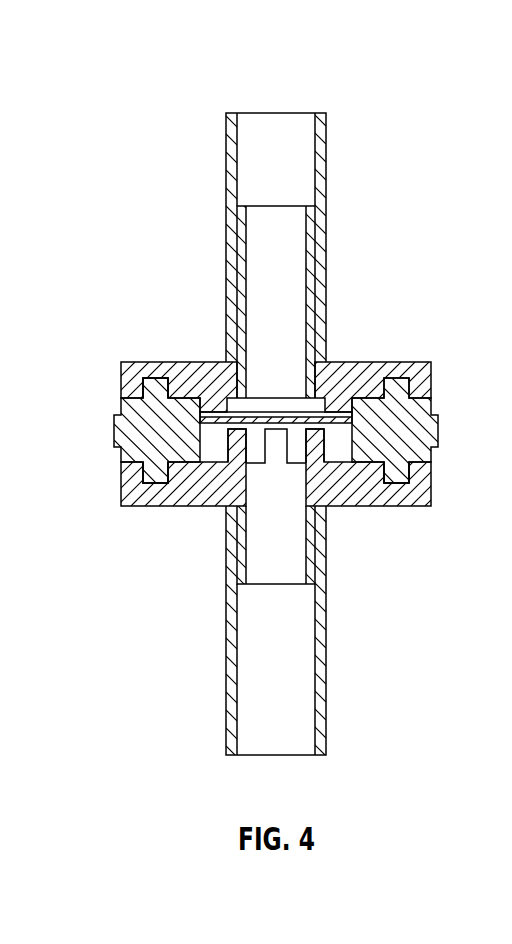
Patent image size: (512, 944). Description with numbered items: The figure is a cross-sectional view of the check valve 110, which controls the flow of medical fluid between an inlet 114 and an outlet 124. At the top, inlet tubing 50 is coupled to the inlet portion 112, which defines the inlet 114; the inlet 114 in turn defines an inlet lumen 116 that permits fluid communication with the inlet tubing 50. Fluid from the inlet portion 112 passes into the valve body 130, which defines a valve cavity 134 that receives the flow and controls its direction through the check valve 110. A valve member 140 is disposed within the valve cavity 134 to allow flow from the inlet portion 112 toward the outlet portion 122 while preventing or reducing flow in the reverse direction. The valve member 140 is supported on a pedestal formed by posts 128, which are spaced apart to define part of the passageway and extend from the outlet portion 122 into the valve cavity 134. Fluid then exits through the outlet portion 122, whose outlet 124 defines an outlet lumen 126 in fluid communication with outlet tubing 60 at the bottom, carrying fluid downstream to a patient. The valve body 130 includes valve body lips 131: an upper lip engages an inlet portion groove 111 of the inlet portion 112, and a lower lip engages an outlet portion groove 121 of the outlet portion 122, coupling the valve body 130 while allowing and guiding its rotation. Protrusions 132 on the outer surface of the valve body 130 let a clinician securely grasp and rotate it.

The check valve 110 is at (416, 78).
The inlet tubing 50 is at (324, 143).
The inlet lumen 116 is at (270, 238).
The inlet 114 is at (242, 272).
The inlet portion 112 is at (153, 362).
The inlet portion groove 111 is at (153, 378).
The posts 128 is at (226, 447).
The protrusions 132 is at (117, 433).
The outlet portion groove 121 is at (152, 503).
The outlet portion 122 is at (208, 508).
The outlet 124 is at (313, 547).
The outlet lumen 126 is at (277, 577).
The outlet tubing 60 is at (315, 707).
The valve member 140 is at (338, 410).
The valve cavity 134 is at (338, 435).
The valve body 130 is at (415, 415).
The valve body lips 131 is at (395, 473).